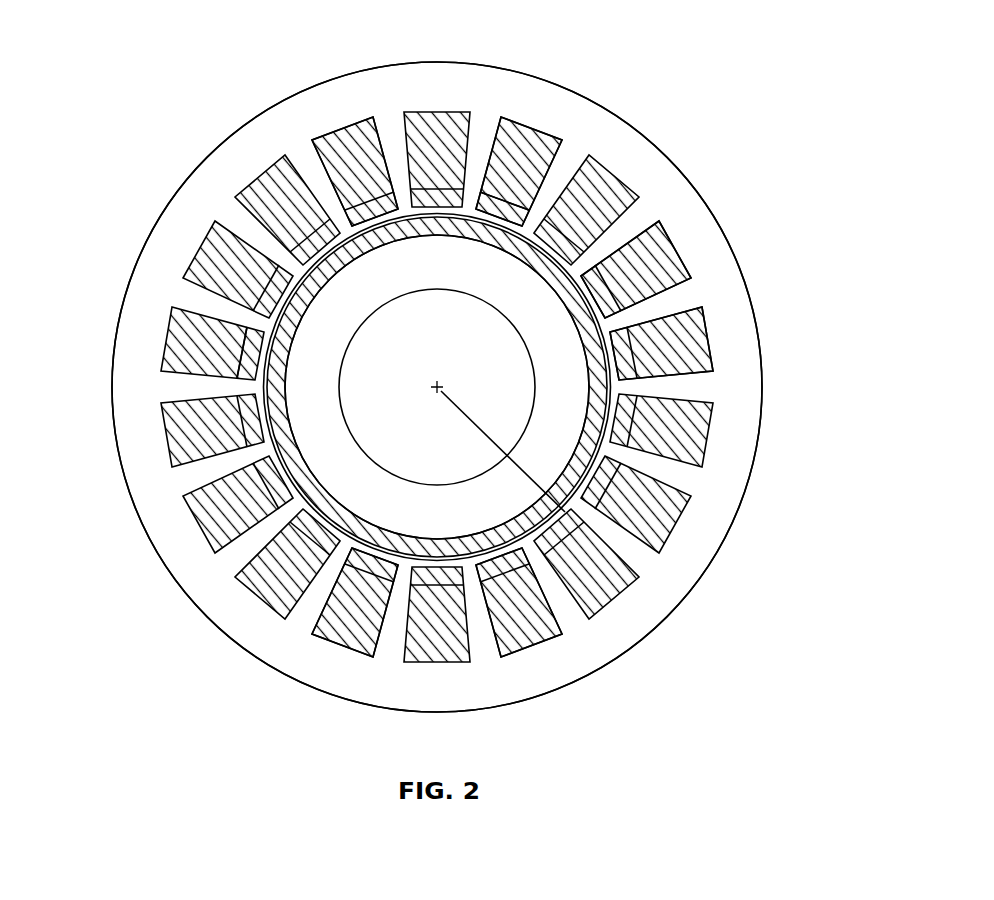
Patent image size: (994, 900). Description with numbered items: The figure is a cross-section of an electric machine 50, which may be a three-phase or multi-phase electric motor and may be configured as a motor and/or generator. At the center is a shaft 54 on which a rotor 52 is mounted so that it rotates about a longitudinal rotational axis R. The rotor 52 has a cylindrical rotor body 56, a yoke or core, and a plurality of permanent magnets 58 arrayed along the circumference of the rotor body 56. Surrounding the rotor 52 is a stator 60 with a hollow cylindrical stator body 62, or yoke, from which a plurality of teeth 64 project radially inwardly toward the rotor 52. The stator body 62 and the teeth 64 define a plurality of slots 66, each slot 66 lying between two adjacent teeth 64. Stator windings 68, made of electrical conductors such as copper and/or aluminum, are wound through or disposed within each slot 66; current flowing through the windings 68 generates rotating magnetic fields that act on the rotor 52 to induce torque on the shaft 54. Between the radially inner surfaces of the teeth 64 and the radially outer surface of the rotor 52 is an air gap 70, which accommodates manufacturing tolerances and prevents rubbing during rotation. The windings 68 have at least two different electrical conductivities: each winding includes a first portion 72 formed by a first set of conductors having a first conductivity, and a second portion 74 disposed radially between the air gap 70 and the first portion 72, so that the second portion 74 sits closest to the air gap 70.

The electric machine 50 is at (445, 387).
The rotor 52 is at (444, 387).
The shaft 54 is at (362, 400).
The rotor body 56 is at (332, 453).
The permanent magnets 58 is at (597, 378).
The stator 60 is at (649, 135).
The stator body 62 is at (632, 632).
The teeth 64 is at (390, 640).
The slots 66 is at (253, 177).
The stator windings 68 is at (670, 343).
The air gap 70 is at (388, 165).
The first portion 72 is at (538, 157).
The second portion 74 is at (500, 208).
The rotational axis R is at (565, 512).